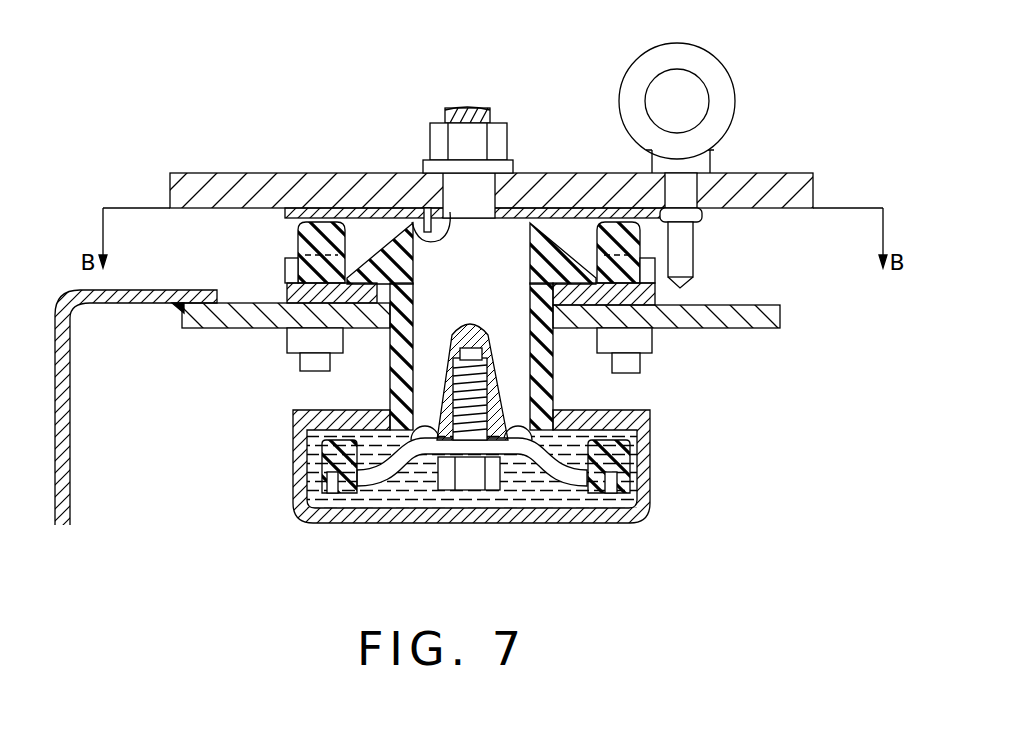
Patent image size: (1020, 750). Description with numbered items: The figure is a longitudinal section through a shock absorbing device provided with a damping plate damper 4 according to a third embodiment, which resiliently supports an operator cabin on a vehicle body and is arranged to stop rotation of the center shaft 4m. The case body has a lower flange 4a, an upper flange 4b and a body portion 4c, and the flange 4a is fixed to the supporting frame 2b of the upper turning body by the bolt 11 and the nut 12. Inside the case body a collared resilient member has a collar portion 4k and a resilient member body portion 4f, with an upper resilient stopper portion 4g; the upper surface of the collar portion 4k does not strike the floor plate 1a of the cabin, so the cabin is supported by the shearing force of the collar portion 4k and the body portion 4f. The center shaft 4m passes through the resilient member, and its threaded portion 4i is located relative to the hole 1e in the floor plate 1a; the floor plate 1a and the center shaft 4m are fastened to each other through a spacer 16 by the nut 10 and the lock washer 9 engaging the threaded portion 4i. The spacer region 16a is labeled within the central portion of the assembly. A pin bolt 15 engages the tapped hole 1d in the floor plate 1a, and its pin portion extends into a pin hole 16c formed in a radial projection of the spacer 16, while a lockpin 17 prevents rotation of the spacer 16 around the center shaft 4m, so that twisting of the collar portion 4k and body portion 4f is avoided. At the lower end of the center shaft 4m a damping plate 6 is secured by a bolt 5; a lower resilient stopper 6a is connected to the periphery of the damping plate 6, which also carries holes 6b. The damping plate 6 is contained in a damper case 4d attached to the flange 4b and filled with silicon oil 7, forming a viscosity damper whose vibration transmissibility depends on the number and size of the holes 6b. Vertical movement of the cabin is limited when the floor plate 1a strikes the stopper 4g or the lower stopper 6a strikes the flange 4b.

The floor plate 1a is at (772, 190).
The tapped hole 1d is at (714, 186).
The hole 1e is at (458, 188).
The supporting frame 2b is at (758, 330).
The damping plate damper 4 is at (692, 402).
The lower flange 4a is at (674, 303).
The upper flange 4b is at (650, 425).
The body portion 4c is at (390, 372).
The damper case 4d is at (652, 500).
The resilient member body portion 4f is at (403, 388).
The upper resilient stopper portion 4g is at (297, 236).
The threaded portion 4i is at (448, 108).
The collar portion 4k is at (386, 253).
The center shaft 4m is at (513, 235).
The bolt 5 is at (468, 492).
The damping plate 6 is at (370, 482).
The lower resilient stopper 6a is at (320, 465).
The holes 6b is at (527, 468).
The silicon oil 7 is at (500, 500).
The lock washer 9 is at (427, 210).
The nut 10 is at (500, 131).
The bolt 11 is at (641, 364).
The nut 12 is at (654, 344).
The pin bolt 15 is at (718, 70).
The spacer 16 is at (705, 214).
The bore 16a is at (492, 222).
The pin hole 16c is at (694, 242).
The lockpin 17 is at (413, 220).